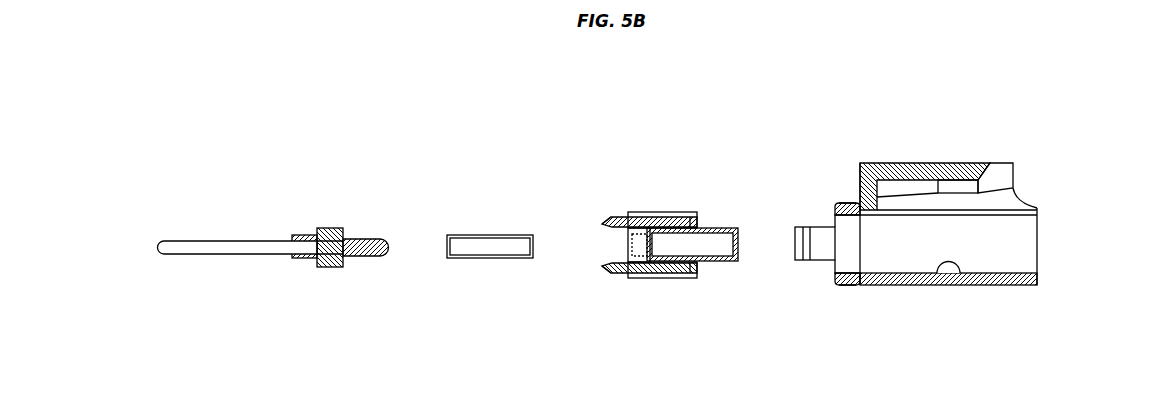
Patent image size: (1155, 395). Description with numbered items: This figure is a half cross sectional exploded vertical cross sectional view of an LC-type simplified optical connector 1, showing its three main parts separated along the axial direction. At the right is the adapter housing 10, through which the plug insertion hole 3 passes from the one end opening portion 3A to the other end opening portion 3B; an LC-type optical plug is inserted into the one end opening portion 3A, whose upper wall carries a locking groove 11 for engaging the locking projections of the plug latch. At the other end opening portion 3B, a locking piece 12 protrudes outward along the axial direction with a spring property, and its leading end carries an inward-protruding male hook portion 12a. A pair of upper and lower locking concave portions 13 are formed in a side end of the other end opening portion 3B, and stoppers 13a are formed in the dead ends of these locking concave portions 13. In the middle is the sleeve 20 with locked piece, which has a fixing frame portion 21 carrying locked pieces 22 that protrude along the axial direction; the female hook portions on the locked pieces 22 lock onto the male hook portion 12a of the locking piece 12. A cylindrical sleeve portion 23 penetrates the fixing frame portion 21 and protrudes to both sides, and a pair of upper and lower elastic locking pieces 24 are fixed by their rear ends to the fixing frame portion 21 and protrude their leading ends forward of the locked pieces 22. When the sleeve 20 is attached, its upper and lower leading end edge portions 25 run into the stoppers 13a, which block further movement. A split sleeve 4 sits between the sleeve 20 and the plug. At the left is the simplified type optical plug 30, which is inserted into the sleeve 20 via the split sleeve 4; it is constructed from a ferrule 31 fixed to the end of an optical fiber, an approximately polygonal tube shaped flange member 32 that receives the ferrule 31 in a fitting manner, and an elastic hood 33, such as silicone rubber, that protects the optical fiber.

The LC-type simplified optical connector 1 is at (487, 150).
The plug insertion hole 3 is at (961, 283).
The one end opening portion 3A is at (1039, 243).
The other end opening portion 3B is at (843, 240).
The split sleeve 4 is at (491, 235).
The adapter housing 10 is at (930, 163).
The locking groove 11 is at (980, 163).
The locking piece 12 is at (793, 251).
The male hook portion 12a is at (817, 227).
The locking concave portion 13 is at (838, 204).
The stopper 13a is at (849, 203).
The sleeve with locked piece 20 is at (620, 206).
The fixing frame portion 21 is at (683, 217).
The locked piece 22 is at (660, 278).
The cylindrical sleeve portion 23 is at (712, 228).
The elastic locking piece 24 is at (607, 267).
The leading end edge portion 25 is at (698, 217).
The simplified type optical plug 30 is at (316, 226).
The ferrule 31 is at (367, 257).
The flange member 32 is at (331, 228).
The hood 33 is at (297, 235).